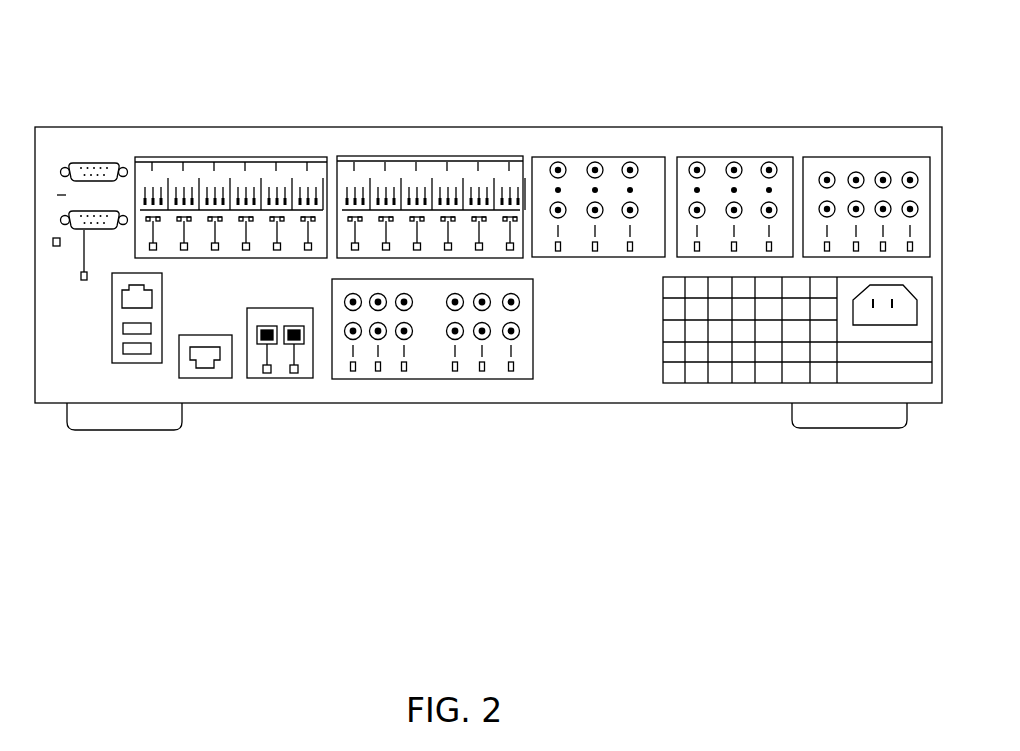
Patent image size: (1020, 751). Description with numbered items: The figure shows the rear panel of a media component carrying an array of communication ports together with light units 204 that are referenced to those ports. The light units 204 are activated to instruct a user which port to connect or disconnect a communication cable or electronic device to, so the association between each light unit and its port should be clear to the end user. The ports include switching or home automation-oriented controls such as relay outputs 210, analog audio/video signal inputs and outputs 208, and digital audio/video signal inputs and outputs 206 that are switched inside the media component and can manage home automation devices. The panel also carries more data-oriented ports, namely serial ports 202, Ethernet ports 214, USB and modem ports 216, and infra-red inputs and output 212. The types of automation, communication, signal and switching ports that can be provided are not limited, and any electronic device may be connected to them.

The serial ports 202 is at (89, 162).
The light units 204 is at (57, 195).
The digital audio/video signal inputs and outputs 206 is at (282, 378).
The analog audio/video signal inputs and outputs 208 is at (430, 379).
The relay outputs 210 is at (215, 157).
The infra-red inputs and output 212 is at (586, 157).
The Ethernet ports 214 is at (207, 378).
The USB ports and modem ports 216 is at (143, 363).